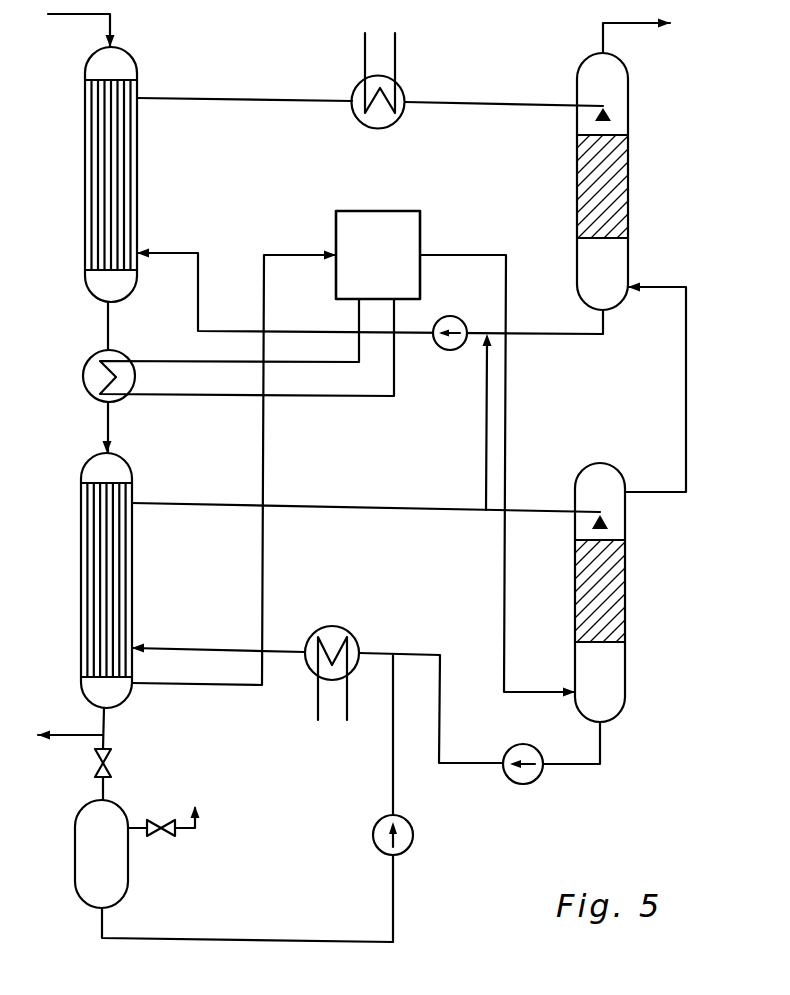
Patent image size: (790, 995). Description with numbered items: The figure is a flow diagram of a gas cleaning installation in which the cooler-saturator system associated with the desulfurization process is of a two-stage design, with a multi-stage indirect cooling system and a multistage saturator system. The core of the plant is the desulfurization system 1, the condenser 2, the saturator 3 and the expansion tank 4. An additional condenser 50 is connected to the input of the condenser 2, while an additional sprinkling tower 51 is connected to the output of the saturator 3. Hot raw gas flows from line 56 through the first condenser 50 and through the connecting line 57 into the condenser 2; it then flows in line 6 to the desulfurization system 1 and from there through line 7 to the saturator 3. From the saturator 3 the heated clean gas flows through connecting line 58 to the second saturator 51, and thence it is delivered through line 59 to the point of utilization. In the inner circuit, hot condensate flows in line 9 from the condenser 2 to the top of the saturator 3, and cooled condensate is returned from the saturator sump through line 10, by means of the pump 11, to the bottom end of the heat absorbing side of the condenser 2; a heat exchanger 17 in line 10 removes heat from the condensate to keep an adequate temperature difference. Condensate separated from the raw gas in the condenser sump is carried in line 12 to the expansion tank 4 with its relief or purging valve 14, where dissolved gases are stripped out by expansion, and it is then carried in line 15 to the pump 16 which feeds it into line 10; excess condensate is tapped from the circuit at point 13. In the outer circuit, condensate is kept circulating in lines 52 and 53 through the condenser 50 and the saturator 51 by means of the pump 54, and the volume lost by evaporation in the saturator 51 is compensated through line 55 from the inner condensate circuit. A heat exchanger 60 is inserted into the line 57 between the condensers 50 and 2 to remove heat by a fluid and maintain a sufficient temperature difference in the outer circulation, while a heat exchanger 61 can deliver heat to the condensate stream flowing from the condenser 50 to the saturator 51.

The desulfurization system 1 is at (378, 255).
The condenser 2 is at (97, 580).
The saturator 3 is at (611, 592).
The expansion tank 4 is at (89, 854).
The line 6 is at (234, 455).
The line 7 is at (497, 461).
The line 9 is at (366, 494).
The line 10 is at (431, 693).
The pump 11 is at (551, 763).
The line 12 is at (118, 754).
The tapping point 13 is at (70, 721).
The relief or purging valve 14 is at (164, 839).
The line 15 is at (247, 925).
The pump 16 is at (413, 798).
The heat exchanger 17 is at (245, 672).
The additional condenser 50 is at (94, 174).
The additional sprinkling tower 51 is at (622, 181).
The line 52 is at (370, 89).
The line 53 is at (370, 293).
The pump 54 is at (468, 328).
The line 55 is at (472, 422).
The line 56 is at (81, 32).
The connecting line 57 is at (91, 377).
The connecting line 58 is at (656, 388).
The line 59 is at (636, 38).
The heat exchanger 60 is at (222, 350).
The heat exchanger 61 is at (394, 90).